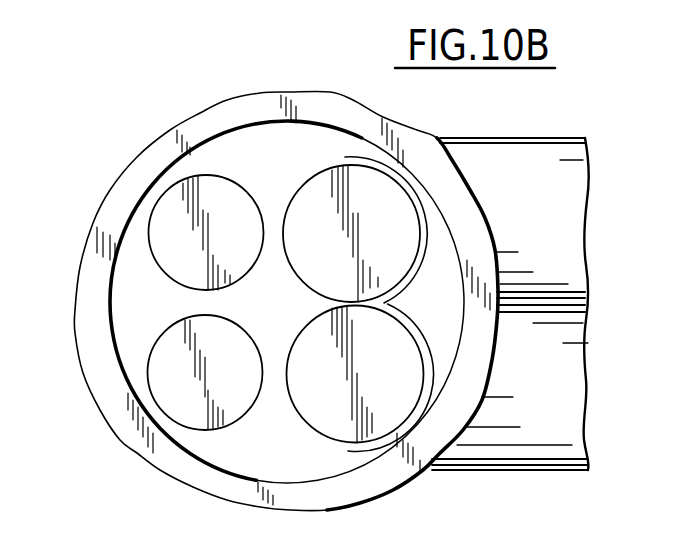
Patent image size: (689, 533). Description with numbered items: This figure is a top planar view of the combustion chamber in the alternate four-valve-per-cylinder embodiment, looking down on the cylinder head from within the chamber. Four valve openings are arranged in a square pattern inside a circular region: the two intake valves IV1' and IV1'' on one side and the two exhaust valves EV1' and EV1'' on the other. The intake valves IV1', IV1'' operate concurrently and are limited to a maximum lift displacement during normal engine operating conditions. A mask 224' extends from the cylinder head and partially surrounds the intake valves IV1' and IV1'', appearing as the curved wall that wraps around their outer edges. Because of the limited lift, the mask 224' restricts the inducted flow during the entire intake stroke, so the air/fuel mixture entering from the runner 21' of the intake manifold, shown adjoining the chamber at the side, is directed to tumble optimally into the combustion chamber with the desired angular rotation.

The mask 224' is at (314, 300).
The runner 21' is at (536, 304).
The engine exhaust valve EV1'' is at (206, 232).
The intake valve IV1'' is at (351, 233).
The engine exhaust valve EV1' is at (205, 372).
The intake valve IV1' is at (355, 375).